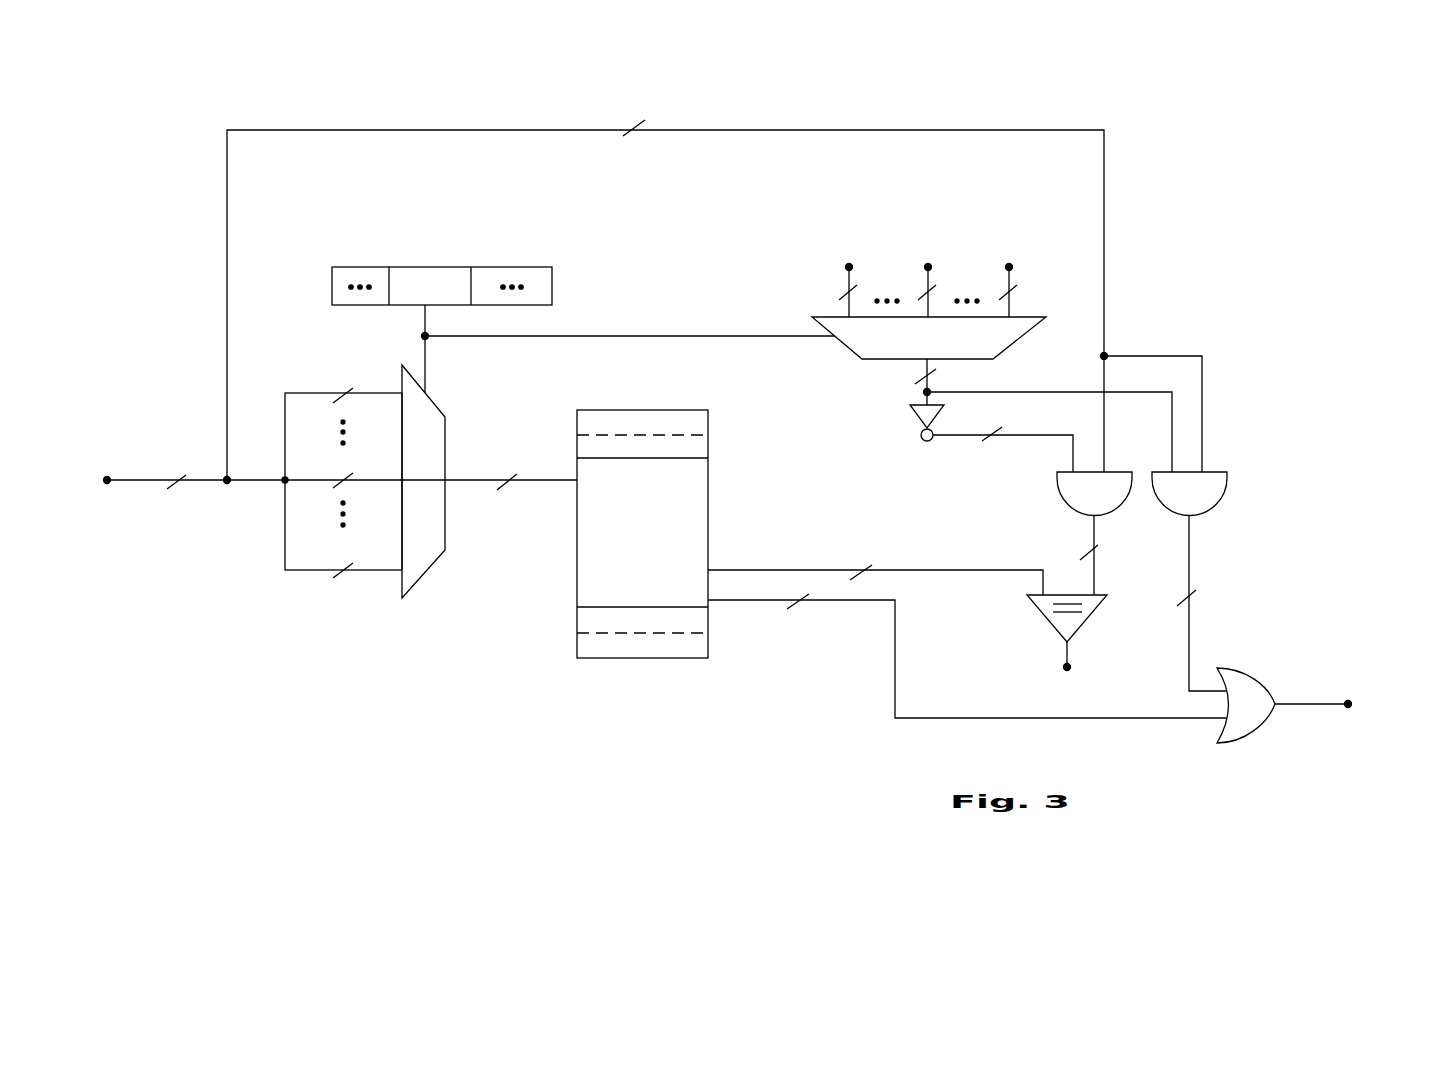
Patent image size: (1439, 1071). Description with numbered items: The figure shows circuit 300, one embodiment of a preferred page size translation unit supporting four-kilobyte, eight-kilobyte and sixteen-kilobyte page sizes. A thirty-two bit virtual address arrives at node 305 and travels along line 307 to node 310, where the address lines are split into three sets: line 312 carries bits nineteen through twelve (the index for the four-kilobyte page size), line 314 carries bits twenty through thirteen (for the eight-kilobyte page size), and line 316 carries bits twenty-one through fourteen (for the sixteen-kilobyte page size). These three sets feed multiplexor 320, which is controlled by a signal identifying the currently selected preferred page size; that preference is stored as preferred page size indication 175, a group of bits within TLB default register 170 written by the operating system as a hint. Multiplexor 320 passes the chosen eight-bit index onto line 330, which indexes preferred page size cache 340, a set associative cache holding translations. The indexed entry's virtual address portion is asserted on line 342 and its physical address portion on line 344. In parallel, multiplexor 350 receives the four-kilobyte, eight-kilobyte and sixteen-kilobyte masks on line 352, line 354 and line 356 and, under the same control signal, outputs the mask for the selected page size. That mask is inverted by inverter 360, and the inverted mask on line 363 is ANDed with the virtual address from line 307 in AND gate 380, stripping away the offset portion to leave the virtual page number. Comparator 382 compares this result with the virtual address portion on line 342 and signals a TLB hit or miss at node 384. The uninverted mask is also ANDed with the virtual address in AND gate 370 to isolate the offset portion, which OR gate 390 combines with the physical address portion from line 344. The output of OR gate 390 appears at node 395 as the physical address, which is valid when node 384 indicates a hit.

The circuit 300 is at (1185, 138).
The TLB default register 170 is at (436, 256).
The preferred page size indication 175 is at (430, 286).
The node 305 is at (112, 466).
The line 307 is at (140, 490).
The node 310 is at (285, 480).
The line 312 is at (290, 393).
The line 314 is at (313, 478).
The line 316 is at (313, 568).
The multiplexor 320 is at (424, 481).
The line 330 is at (470, 486).
The preferred page size cache 340 is at (592, 398).
The line 342 is at (735, 568).
The line 344 is at (748, 610).
The multiplexor 350 is at (992, 394).
The line 352 is at (847, 267).
The line 354 is at (926, 267).
The line 356 is at (1007, 267).
The inverter 360 is at (910, 412).
The inverted mask bus 363 is at (950, 438).
The AND gate 370 is at (1189, 581).
The AND gate 380 is at (1094, 533).
The comparator 382 is at (1035, 612).
The node 384 is at (1062, 668).
The OR gate 390 is at (1220, 742).
The node 395 is at (1352, 708).